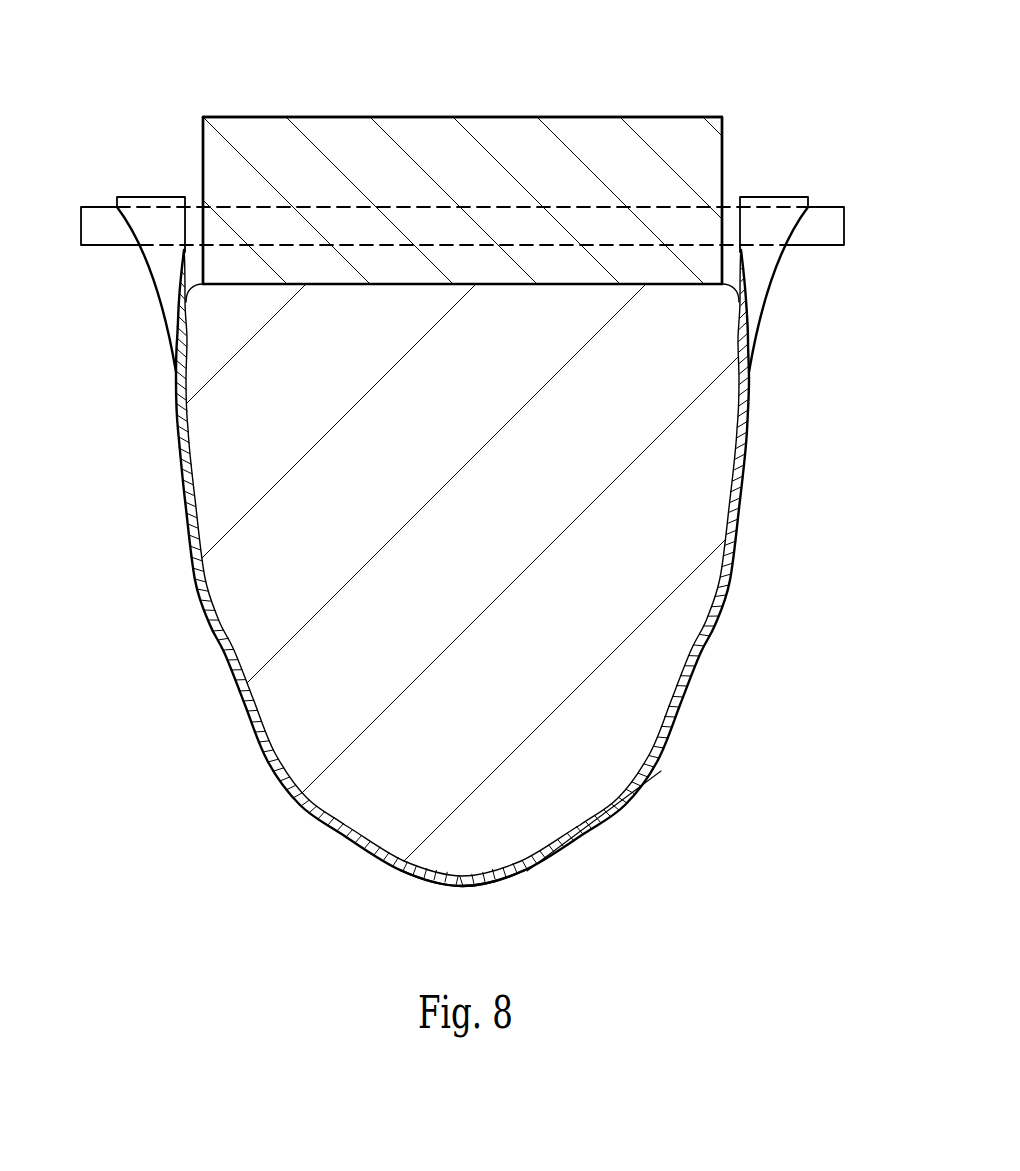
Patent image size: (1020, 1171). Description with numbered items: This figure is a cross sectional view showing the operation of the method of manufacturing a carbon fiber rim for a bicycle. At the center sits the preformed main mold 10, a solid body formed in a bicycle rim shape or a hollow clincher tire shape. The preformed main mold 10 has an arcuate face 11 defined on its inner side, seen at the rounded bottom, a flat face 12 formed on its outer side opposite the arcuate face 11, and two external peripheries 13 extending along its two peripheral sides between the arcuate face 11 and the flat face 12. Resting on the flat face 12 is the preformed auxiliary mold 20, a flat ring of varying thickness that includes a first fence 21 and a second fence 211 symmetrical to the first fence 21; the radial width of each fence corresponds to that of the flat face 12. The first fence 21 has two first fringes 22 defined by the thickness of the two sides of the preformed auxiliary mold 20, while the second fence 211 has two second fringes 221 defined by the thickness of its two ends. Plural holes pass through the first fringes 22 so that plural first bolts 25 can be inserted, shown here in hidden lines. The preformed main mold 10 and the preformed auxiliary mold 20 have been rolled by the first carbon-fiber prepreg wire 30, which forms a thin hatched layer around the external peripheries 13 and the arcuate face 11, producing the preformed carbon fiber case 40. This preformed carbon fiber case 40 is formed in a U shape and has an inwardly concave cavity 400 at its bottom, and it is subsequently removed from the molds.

The preformed main mold 10 is at (224, 650).
The arcuate face 11 is at (458, 874).
The flat face 12 is at (337, 284).
The external periphery 13 is at (702, 614).
The preformed auxiliary mold 20 is at (668, 117).
The first fence 21 is at (462, 293).
The first fringe 22 is at (724, 152).
The first bolt 25 is at (826, 212).
The first carbon-fiber prepreg wire 30 is at (689, 711).
The preformed carbon fiber case 40 is at (657, 773).
The second fence 211 is at (317, 117).
The second fringe 221 is at (202, 165).
The inwardly concave cavity 400 is at (486, 867).